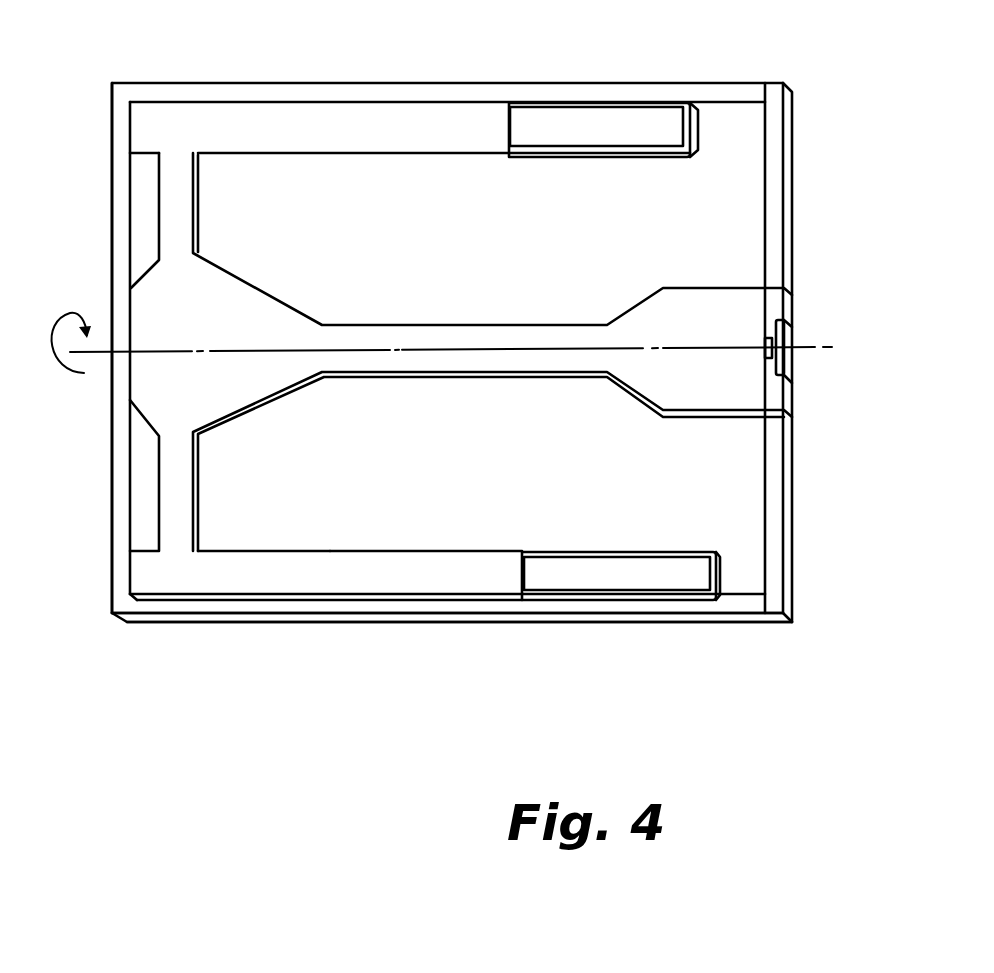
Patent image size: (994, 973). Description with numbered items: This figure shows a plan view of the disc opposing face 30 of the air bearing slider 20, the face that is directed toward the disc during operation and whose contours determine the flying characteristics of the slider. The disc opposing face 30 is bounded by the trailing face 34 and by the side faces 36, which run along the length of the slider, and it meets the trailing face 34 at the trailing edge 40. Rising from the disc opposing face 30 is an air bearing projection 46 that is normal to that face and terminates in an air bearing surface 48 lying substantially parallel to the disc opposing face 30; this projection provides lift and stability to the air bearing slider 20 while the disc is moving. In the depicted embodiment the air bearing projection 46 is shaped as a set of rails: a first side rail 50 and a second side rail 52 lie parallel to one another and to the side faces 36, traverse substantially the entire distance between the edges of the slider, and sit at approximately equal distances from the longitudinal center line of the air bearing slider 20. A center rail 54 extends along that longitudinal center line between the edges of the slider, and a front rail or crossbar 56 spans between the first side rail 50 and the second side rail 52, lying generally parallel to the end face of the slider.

The air bearing slider 20 is at (828, 108).
The disc opposing face 30 is at (140, 501).
The trailing face 34 is at (104, 466).
The side faces 36 is at (498, 624).
The trailing edge 40 is at (108, 523).
The air bearing projection 46 is at (165, 381).
The air bearing surface 48 is at (224, 576).
The first side rail 50 is at (348, 110).
The second side rail 52 is at (375, 573).
The center rail 54 is at (432, 340).
The front rail or crossbar 56 is at (162, 297).